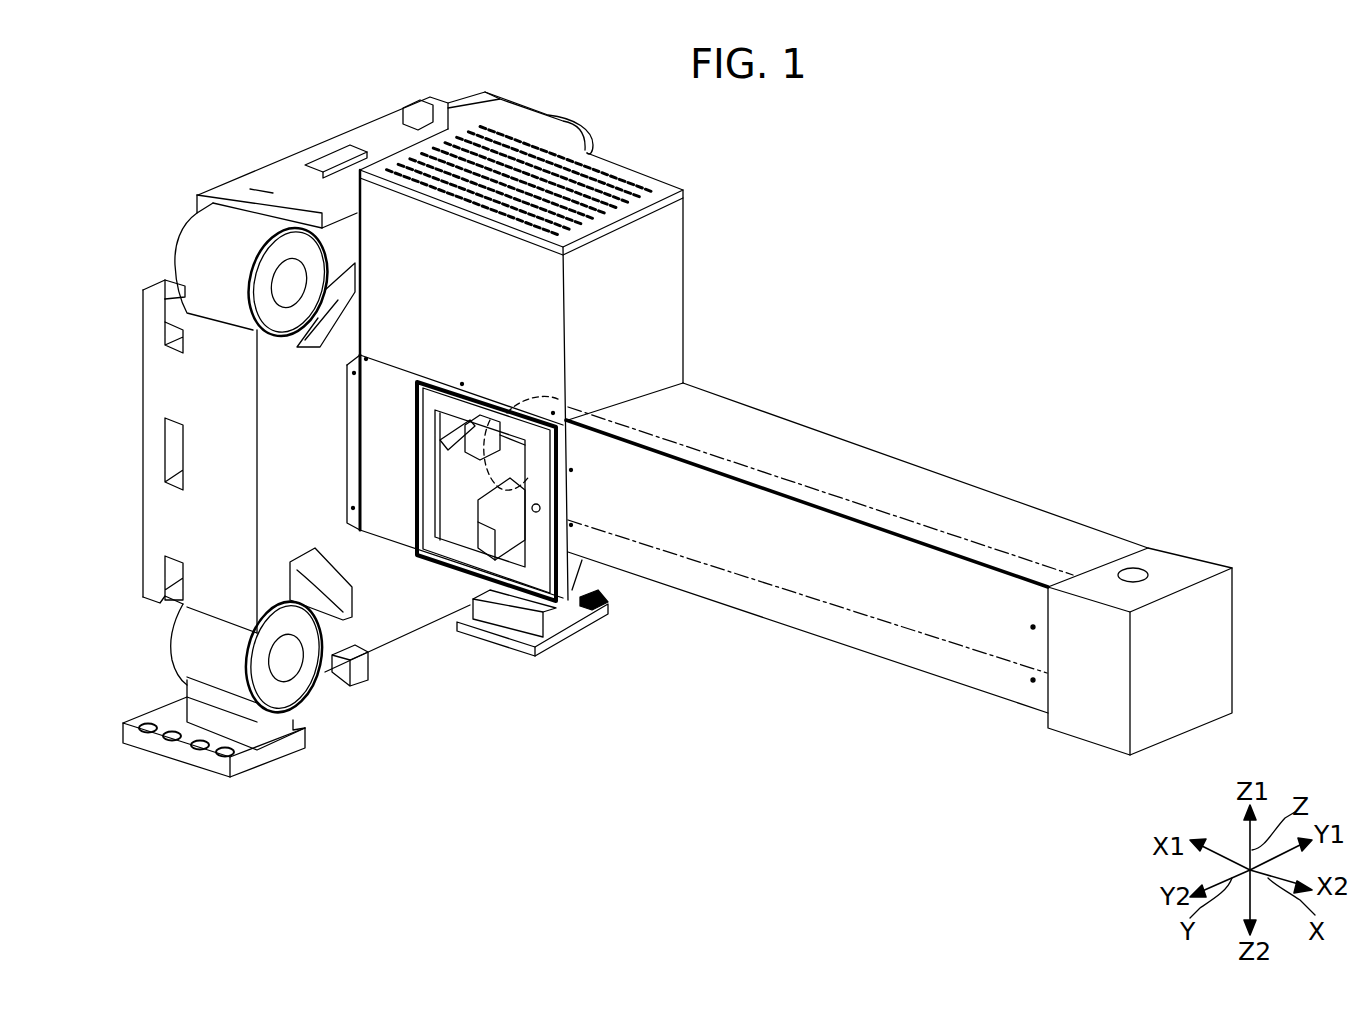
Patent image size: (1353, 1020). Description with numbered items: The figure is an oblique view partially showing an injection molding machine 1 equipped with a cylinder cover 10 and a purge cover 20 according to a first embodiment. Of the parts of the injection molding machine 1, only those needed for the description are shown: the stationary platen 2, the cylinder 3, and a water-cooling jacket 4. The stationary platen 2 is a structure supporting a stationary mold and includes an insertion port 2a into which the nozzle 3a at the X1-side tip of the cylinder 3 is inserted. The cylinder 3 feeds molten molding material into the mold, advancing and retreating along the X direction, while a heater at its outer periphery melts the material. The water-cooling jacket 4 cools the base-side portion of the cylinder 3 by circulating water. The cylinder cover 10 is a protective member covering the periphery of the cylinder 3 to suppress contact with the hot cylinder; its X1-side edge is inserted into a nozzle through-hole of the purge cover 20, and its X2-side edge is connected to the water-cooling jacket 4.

The injection molding machine 1 is at (1020, 238).
The stationary platen 2 is at (290, 180).
The insertion port 2a is at (446, 462).
The cylinder 3 is at (806, 487).
The nozzle 3a is at (455, 442).
The water-cooling jacket 4 is at (1155, 580).
The cylinder cover 10 is at (1020, 493).
The purge cover 20 is at (688, 283).